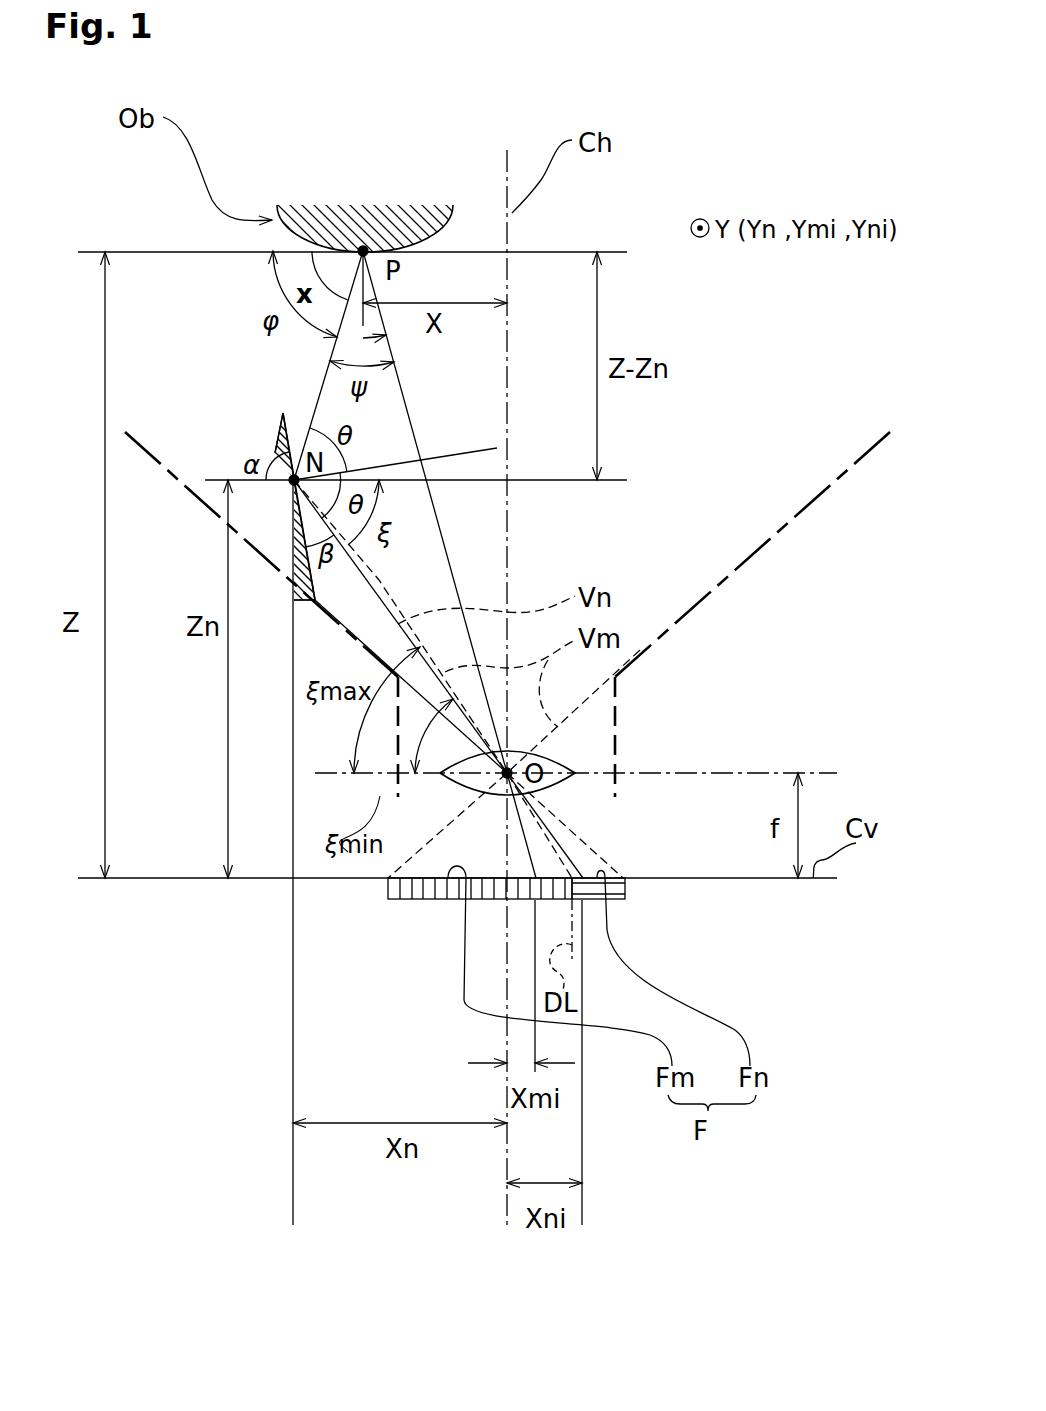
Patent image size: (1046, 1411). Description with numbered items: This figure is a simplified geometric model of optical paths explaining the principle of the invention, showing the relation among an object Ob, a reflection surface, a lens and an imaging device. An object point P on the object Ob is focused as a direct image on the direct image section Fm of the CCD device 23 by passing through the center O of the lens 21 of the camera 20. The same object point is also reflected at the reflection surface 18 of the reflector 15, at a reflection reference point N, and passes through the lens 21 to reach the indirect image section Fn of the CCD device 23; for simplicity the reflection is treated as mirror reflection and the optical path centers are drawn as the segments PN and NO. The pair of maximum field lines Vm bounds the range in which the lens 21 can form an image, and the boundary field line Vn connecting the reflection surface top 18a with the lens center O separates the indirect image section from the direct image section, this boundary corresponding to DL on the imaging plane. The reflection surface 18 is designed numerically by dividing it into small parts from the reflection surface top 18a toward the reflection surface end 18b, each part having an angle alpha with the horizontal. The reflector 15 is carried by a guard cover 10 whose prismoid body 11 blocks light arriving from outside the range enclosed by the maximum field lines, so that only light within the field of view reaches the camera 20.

The guard cover 10 is at (507, 595).
The body 11 is at (777, 530).
The reflector 15 is at (270, 446).
The reflection surface 18 is at (352, 544).
The reflection surface top 18a is at (276, 428).
The reflection surface end 18b is at (320, 584).
The camera 20 is at (627, 951).
The lens 21 is at (558, 789).
The CCD device 23 is at (630, 893).